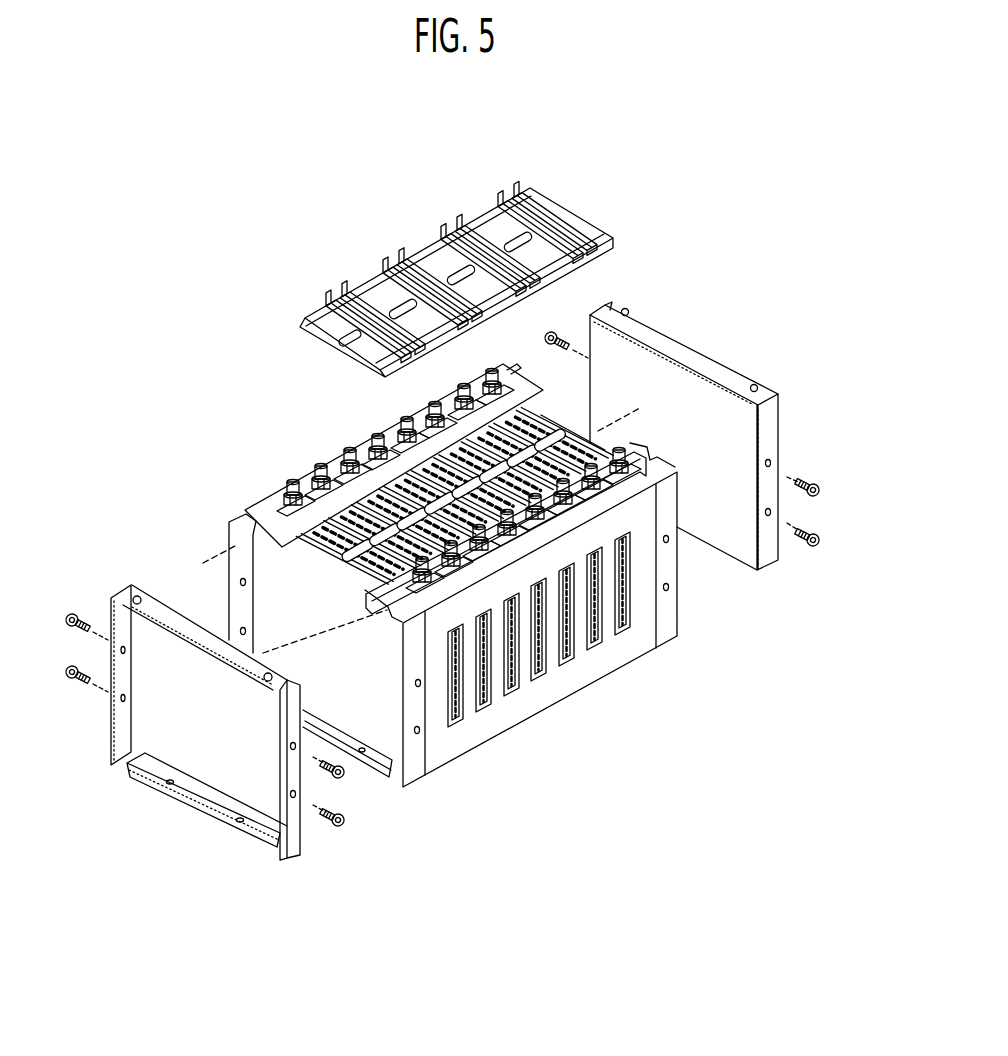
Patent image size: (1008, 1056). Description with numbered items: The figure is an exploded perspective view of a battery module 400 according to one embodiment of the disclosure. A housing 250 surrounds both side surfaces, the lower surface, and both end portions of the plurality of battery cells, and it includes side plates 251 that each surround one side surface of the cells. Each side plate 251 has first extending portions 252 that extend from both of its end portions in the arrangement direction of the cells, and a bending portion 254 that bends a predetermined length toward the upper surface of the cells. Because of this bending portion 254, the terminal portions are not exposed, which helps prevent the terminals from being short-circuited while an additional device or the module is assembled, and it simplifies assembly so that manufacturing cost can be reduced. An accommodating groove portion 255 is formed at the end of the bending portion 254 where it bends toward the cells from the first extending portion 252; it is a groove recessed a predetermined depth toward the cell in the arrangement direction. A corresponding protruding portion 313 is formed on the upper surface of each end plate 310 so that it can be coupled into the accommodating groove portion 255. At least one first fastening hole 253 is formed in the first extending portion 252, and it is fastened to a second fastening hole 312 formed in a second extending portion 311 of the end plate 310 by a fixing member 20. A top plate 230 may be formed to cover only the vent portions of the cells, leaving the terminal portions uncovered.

The battery module 400 is at (302, 232).
The top plate 230 is at (535, 222).
The housing 250 is at (532, 727).
The side plate 251 is at (583, 676).
The first extending portion 252 is at (677, 484).
The first fastening hole 253 is at (668, 590).
The bending portion 254 is at (290, 487).
The accommodating groove portion 255 is at (385, 598).
The end plate 310 is at (735, 367).
The second extending portion 311 is at (776, 414).
The second fastening hole 312 is at (770, 512).
The protruding portion 313 is at (625, 312).
The fixing member 20 is at (68, 612).